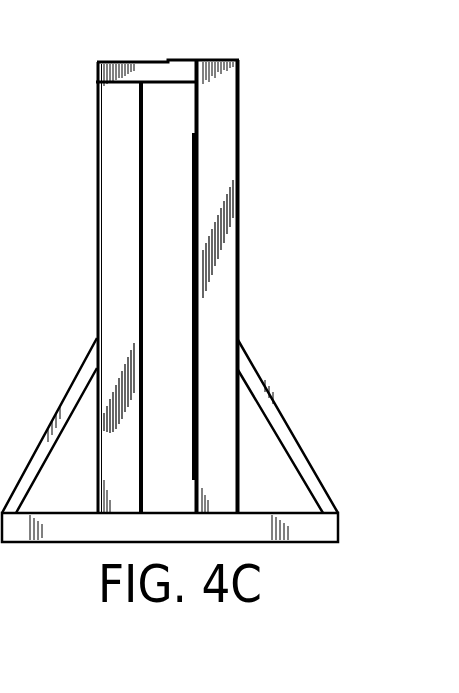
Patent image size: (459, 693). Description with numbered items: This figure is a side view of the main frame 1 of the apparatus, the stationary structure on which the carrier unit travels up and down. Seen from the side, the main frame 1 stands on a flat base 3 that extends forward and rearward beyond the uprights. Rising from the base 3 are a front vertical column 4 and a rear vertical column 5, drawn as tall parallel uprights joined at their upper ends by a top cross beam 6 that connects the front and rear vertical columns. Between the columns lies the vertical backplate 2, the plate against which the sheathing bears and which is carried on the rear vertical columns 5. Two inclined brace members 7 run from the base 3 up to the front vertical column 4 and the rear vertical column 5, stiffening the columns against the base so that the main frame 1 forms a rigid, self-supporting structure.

The main frame 1 is at (242, 125).
The vertical backplate 2 is at (190, 217).
The base 3 is at (313, 527).
The front vertical columns 4 is at (107, 121).
The rear vertical columns 5 is at (218, 169).
The top cross beams 6 is at (158, 64).
The brace members 7 is at (0, 147).